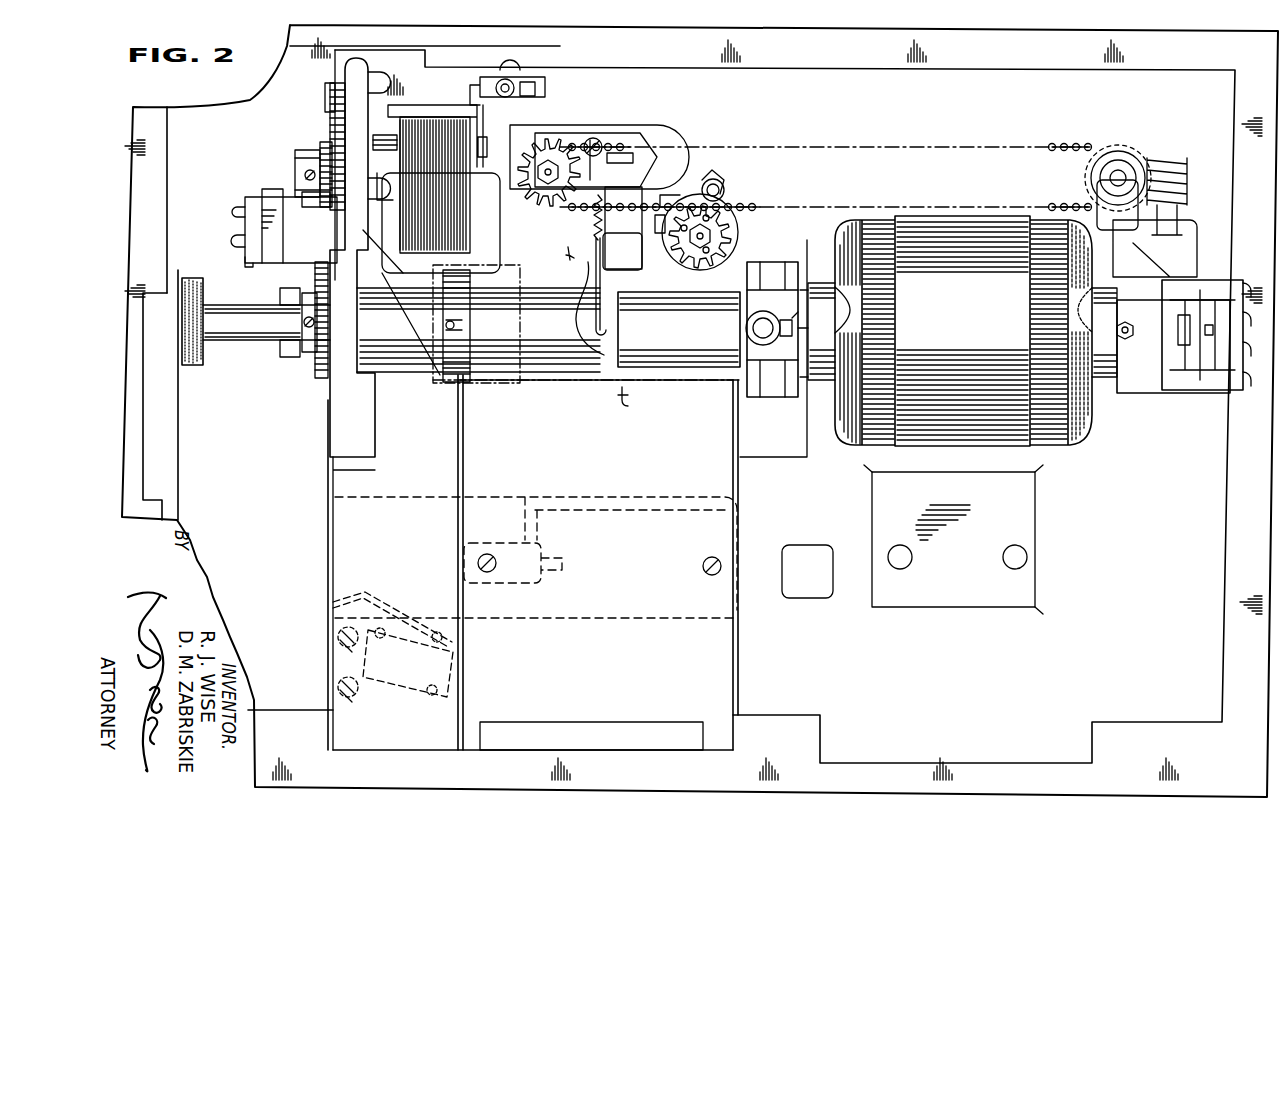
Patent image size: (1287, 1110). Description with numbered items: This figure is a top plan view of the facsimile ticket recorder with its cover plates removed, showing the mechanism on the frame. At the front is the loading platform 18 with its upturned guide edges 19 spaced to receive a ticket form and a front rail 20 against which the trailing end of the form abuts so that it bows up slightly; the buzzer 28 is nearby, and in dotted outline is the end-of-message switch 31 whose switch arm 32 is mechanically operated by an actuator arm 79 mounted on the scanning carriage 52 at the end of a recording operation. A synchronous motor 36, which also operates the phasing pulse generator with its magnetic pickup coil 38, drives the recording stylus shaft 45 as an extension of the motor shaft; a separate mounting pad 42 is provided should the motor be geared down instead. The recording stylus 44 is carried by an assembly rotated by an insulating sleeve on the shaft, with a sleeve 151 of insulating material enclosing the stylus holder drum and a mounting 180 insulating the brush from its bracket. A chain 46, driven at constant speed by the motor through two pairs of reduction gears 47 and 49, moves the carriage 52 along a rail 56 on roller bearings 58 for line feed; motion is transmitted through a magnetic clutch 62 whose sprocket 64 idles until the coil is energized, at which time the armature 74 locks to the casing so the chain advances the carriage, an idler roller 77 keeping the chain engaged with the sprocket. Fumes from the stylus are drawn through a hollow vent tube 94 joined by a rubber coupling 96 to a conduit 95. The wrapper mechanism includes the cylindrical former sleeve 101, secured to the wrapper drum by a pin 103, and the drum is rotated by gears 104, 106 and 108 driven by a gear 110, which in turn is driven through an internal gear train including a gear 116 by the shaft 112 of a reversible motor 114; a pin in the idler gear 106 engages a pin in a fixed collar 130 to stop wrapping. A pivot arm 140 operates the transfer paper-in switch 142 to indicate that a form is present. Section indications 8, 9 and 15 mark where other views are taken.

The section line 8- 8 is at (135, 320).
The section line 9- 9 is at (557, 85).
The section line 15- 15 is at (745, 240).
The loading platform 18 is at (588, 660).
The upturned guide edges 19 is at (458, 722).
The front rail 20 is at (612, 735).
The buzzer 28 is at (822, 590).
The end-of-message switch 31 is at (384, 688).
The switch arm 32 is at (365, 597).
The synchronous motor 36 is at (974, 366).
The magnetic pickup coil 38 is at (1210, 386).
The mounting pad 42 is at (1028, 532).
The recording stylus 44 is at (625, 360).
The recording stylus shaft 45 is at (638, 273).
The chain 46 is at (1058, 146).
The reduction gears 47 is at (1185, 315).
The reduction gears 49 is at (1140, 162).
The scanning carriage 52 is at (345, 132).
The rail 56 is at (462, 76).
The roller bearings 58 is at (545, 86).
The magnetic clutch 62 is at (735, 220).
The sprocket 64 is at (683, 215).
The armature 74 is at (730, 233).
The idler roller 77 is at (718, 190).
The actuator arm 79 is at (470, 600).
The hollow vent tube 94 is at (240, 332).
The conduit 95 is at (178, 450).
The rubber coupling 96 is at (192, 278).
The sleeve 101 is at (462, 349).
The pin 103 is at (456, 322).
The gear 104 is at (309, 345).
The idler gear 106 is at (318, 376).
The gear 108 is at (318, 266).
The gear 110 is at (298, 168).
The shaft 112 is at (382, 140).
The reversible motor 114 is at (452, 187).
The gear 116 is at (337, 207).
The fixed collar 130 is at (280, 294).
The pivot arm 140 is at (602, 262).
The transfer paper-in switch 142 is at (638, 247).
The sleeve 151 is at (668, 362).
The mounting 180 is at (755, 382).